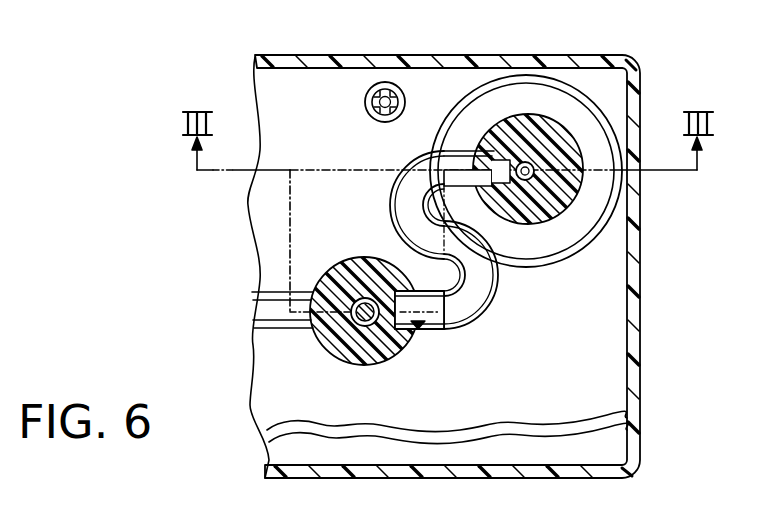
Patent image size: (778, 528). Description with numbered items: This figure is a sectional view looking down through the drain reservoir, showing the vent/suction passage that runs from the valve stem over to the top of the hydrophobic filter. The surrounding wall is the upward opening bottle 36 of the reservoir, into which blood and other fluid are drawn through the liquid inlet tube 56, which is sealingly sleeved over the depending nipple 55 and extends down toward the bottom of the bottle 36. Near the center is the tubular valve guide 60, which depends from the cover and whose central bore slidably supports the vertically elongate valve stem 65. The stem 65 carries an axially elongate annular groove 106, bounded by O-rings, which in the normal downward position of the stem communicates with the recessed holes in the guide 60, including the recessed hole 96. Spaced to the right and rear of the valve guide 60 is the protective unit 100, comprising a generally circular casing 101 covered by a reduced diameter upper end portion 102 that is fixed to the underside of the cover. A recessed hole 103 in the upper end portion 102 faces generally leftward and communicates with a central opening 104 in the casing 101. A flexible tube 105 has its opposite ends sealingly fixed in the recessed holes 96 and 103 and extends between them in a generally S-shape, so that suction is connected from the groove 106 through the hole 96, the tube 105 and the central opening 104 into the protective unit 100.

The bottle 36 is at (279, 62).
The liquid inlet tube 56 is at (378, 92).
The depending nipple 55 is at (393, 88).
The recessed hole 103 is at (474, 148).
The central opening 104 is at (528, 164).
The casing 101 is at (585, 95).
The protective unit 100 is at (608, 108).
The upper end portion 102 is at (568, 184).
The annular groove 106 is at (351, 300).
The valve stem 65 is at (340, 343).
The tubular valve guide 60 is at (357, 356).
The recessed hole 96 is at (419, 330).
The flexible tube 105 is at (469, 301).